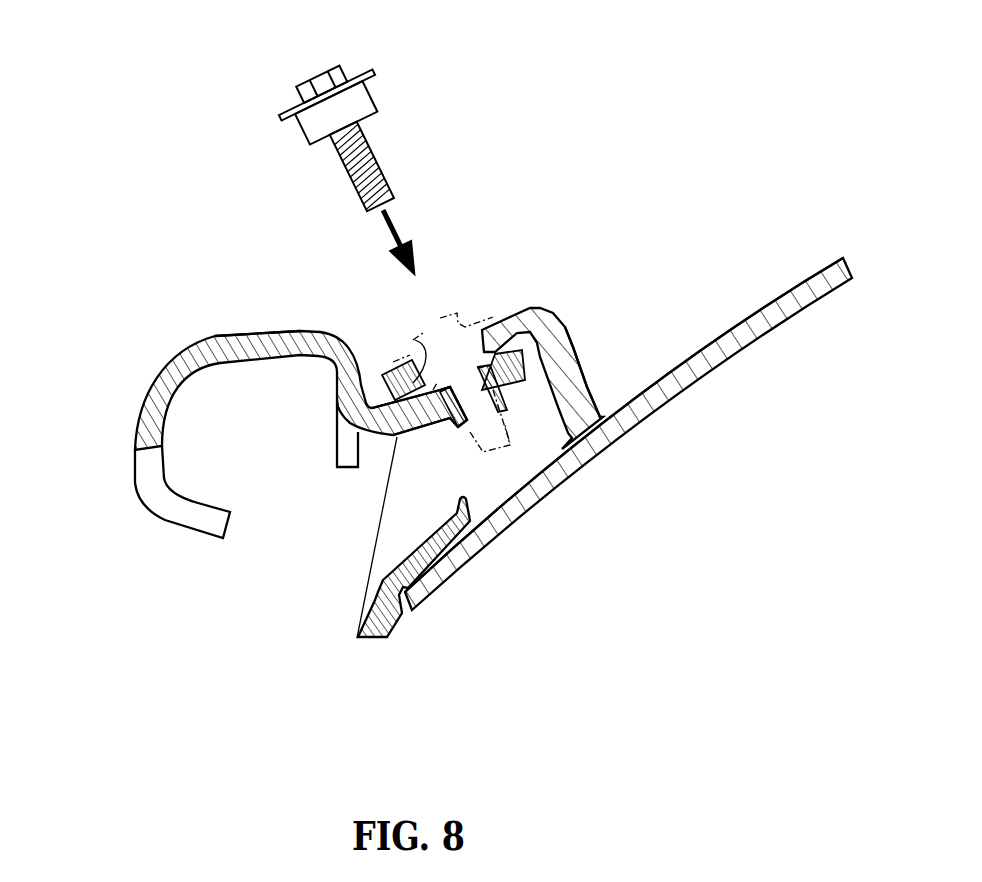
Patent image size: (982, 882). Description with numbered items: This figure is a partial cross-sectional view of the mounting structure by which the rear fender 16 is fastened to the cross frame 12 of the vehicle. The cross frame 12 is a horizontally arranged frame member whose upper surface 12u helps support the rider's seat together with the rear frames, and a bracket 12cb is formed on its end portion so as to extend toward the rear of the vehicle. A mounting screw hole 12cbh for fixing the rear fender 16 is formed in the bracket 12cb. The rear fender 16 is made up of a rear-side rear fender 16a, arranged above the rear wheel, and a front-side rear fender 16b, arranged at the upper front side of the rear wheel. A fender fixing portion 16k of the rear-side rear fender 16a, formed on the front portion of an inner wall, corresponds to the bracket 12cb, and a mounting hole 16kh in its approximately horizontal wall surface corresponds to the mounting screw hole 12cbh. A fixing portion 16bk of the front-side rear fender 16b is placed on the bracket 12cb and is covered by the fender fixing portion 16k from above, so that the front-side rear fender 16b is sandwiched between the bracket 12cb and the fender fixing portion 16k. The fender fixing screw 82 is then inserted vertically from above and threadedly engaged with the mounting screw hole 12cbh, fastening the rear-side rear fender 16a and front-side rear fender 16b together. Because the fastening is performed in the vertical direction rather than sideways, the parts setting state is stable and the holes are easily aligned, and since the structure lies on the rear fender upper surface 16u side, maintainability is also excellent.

The cross frame 12 is at (183, 344).
The upper surface of the cross frame 12u is at (226, 337).
The bracket 12cb is at (420, 418).
The mounting screw hole 12cbh is at (513, 388).
The rear fender 16 is at (556, 457).
The rear-side rear fender 16a is at (657, 420).
The front-side rear fender 16b is at (408, 634).
The fender fixing portion 16k is at (512, 310).
The mounting hole 16kh is at (415, 340).
The fixing portion 16bk is at (563, 325).
The rear fender upper surface 16u is at (708, 346).
The fender fixing screw 82 is at (297, 102).